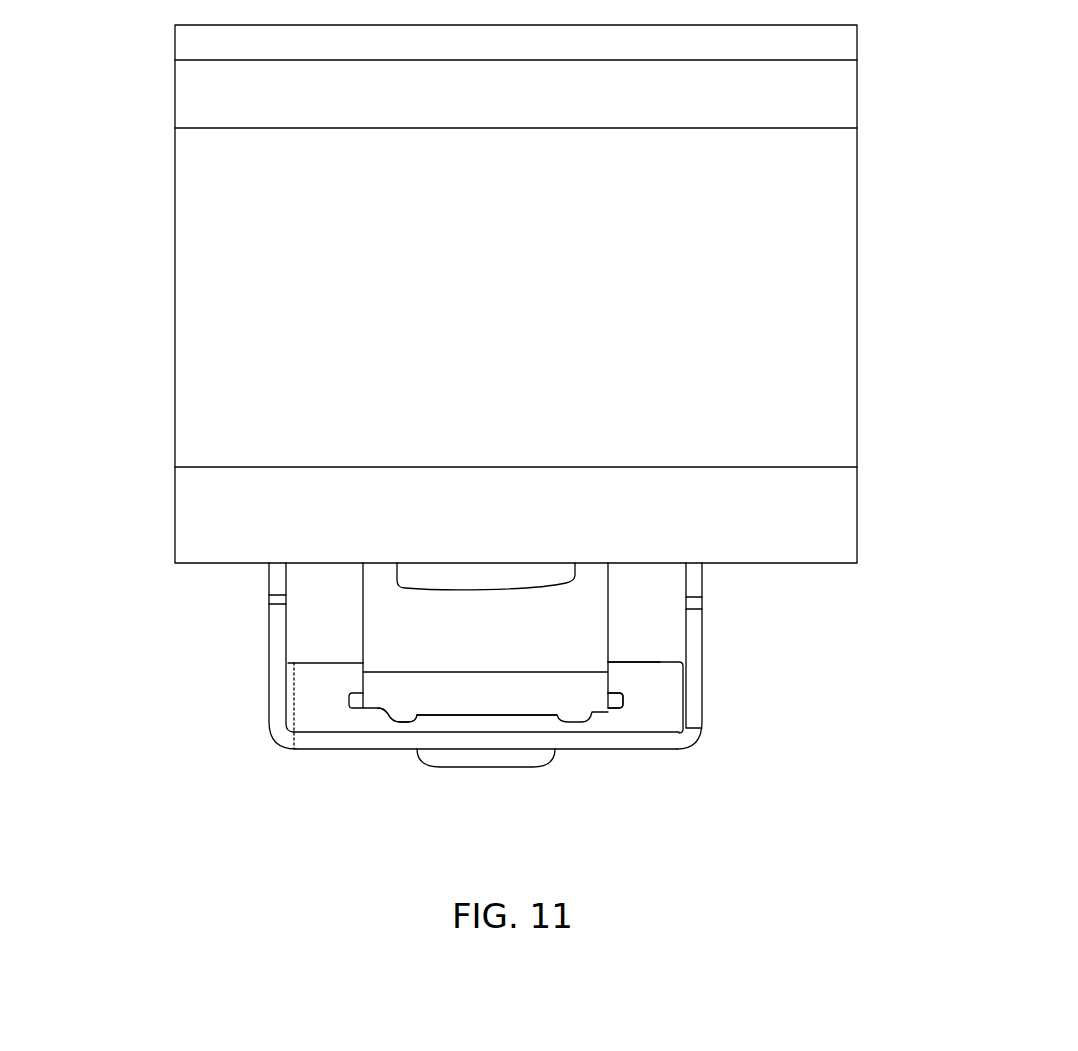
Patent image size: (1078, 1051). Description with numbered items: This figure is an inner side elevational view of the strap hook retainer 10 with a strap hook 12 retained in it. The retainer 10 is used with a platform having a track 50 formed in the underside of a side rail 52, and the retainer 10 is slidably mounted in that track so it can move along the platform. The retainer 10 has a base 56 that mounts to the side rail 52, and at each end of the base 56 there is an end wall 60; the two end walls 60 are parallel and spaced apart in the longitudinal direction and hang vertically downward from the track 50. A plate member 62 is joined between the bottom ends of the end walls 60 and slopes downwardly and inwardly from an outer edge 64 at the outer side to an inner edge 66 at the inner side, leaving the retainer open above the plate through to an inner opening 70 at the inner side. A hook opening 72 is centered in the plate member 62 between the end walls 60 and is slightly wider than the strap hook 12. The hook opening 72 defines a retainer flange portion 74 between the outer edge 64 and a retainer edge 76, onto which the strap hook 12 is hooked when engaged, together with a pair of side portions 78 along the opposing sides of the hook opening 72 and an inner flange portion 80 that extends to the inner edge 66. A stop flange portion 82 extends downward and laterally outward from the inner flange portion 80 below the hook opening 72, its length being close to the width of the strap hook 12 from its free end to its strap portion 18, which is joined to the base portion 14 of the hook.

The strap hook retainer 10 is at (232, 735).
The strap hook 12 is at (590, 603).
The base portion 14 is at (572, 715).
The strap portion 18 is at (387, 590).
The track 50 is at (868, 550).
The side rail 52 is at (207, 327).
The base 56 is at (257, 573).
The end wall 60 is at (277, 627).
The plate member 62 is at (655, 695).
The outer edge 64 is at (645, 660).
The inner edge 66 is at (652, 740).
The inner opening 70 is at (322, 712).
The hook opening 72 is at (498, 712).
The retainer flange portion 74 is at (357, 677).
The retainer edge 76 is at (613, 692).
The side portions 78 is at (345, 697).
The inner flange portion 80 is at (428, 722).
The stop flange portion 82 is at (497, 760).